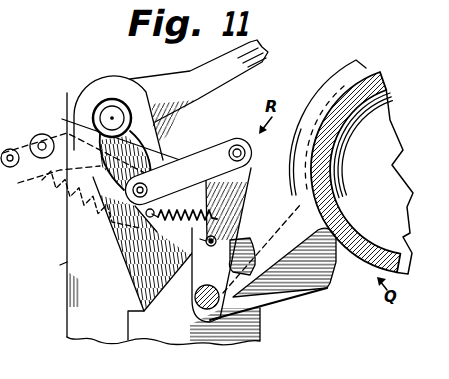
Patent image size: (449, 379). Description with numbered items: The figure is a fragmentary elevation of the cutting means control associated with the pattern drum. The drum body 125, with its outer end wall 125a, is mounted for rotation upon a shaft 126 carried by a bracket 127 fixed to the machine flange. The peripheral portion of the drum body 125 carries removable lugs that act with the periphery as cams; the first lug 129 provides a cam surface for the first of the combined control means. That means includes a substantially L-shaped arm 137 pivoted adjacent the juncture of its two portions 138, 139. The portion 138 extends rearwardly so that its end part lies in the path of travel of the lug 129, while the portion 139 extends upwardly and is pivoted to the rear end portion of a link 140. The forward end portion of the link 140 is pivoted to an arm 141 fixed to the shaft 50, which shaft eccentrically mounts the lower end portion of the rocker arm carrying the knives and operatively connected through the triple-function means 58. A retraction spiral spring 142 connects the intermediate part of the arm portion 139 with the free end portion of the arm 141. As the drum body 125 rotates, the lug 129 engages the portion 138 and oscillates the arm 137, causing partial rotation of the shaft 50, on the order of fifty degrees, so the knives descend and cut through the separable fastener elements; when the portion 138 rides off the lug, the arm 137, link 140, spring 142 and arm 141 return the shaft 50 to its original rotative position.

The shaft 50 is at (112, 118).
The arm 141 is at (169, 142).
The link 140 is at (204, 146).
The upwardly extending portion of L-shaped arm 139 is at (258, 168).
The retraction spiral spring 142 is at (68, 238).
The rearwardly extending portion of L-shaped arm 138 is at (336, 297).
The L-shaped arm 137 is at (284, 306).
The drum body 125 is at (372, 70).
The outer end wall 125a is at (172, 179).
The first lug 129 is at (328, 86).
The shaft 126 is at (0, 223).
The bracket 127 is at (90, 158).
The triple-function means 58 is at (33, 291).